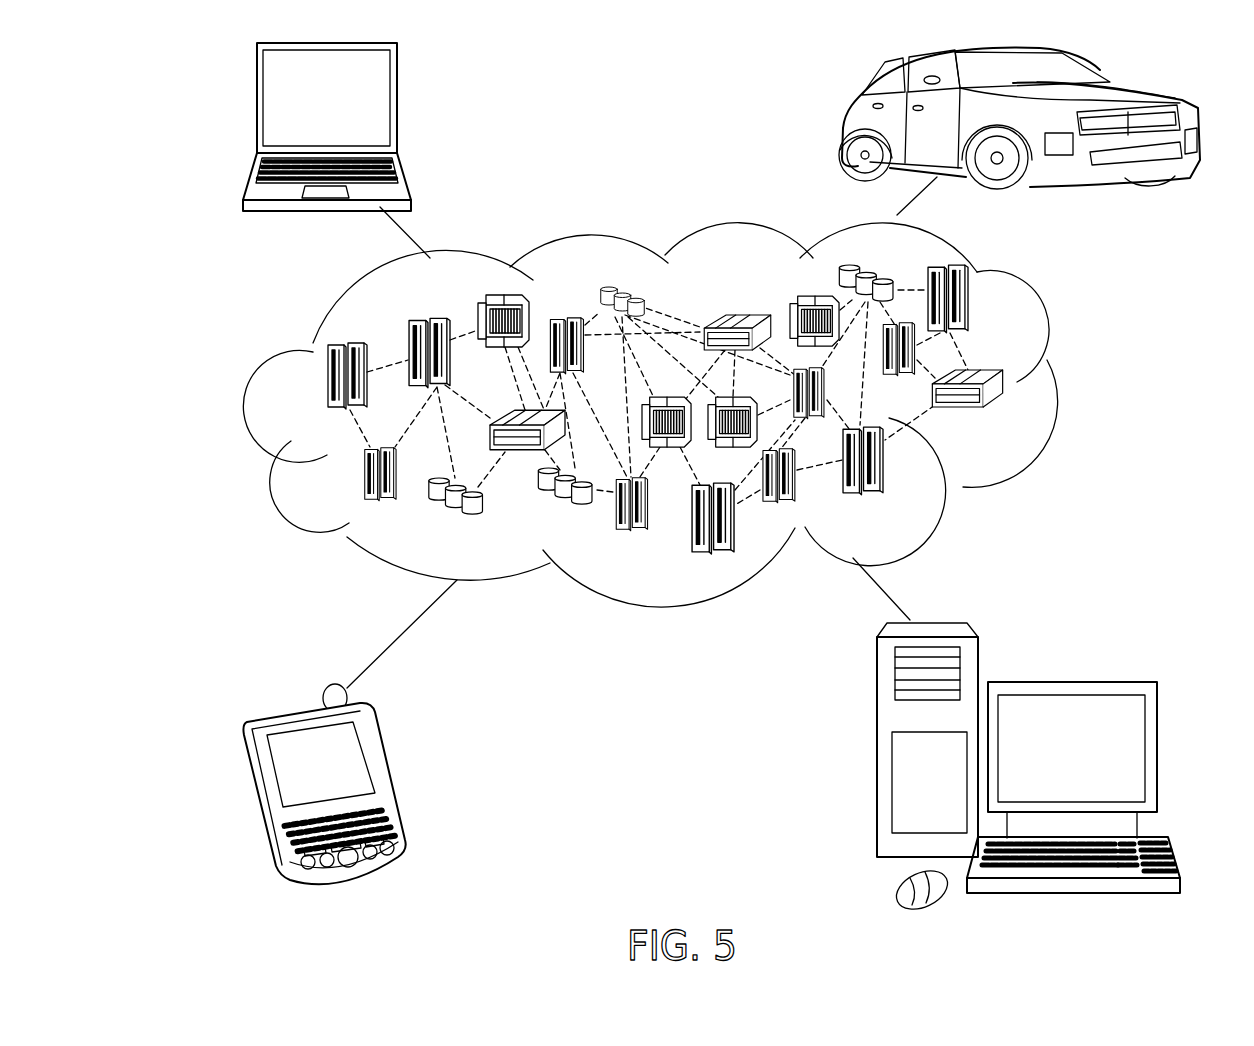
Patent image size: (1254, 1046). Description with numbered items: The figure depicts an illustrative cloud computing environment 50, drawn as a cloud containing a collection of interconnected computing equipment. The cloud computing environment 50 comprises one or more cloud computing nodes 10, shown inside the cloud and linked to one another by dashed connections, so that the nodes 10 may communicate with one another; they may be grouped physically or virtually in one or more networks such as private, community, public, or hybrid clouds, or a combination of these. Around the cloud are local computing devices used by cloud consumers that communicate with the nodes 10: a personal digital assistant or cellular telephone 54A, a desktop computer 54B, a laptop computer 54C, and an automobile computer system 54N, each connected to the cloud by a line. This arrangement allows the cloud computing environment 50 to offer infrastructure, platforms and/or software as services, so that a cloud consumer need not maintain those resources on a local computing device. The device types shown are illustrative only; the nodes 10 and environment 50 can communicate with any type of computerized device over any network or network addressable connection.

The cloud computing node 10 is at (1014, 418).
The cloud computing environment 50 is at (1068, 385).
The personal digital assistant (PDA) or cellular telephone 54A is at (387, 777).
The desktop computer 54B is at (1070, 680).
The laptop computer 54C is at (397, 107).
The automobile computer system 54N is at (843, 126).